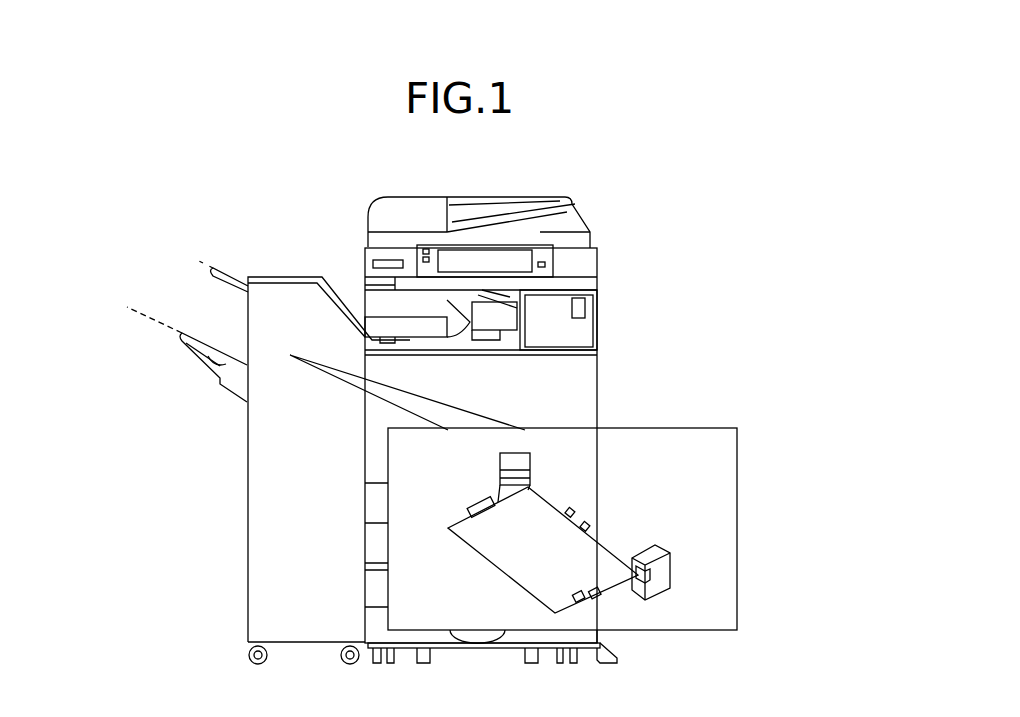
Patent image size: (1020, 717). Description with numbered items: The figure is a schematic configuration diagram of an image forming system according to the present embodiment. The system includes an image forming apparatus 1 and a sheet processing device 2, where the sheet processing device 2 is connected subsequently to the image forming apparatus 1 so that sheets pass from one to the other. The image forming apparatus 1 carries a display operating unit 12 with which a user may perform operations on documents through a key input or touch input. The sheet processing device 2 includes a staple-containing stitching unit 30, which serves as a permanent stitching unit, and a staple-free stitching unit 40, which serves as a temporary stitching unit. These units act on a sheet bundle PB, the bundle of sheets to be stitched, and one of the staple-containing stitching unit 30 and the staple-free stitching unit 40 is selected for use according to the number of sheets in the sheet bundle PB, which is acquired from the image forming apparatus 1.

The image forming apparatus 1 is at (535, 430).
The sheet processing device 2 is at (294, 241).
The display operating unit 12 is at (515, 259).
The staple-containing stitching unit 30 is at (672, 553).
The staple-free stitching unit 40 is at (532, 462).
The sheet bundle PB is at (612, 573).